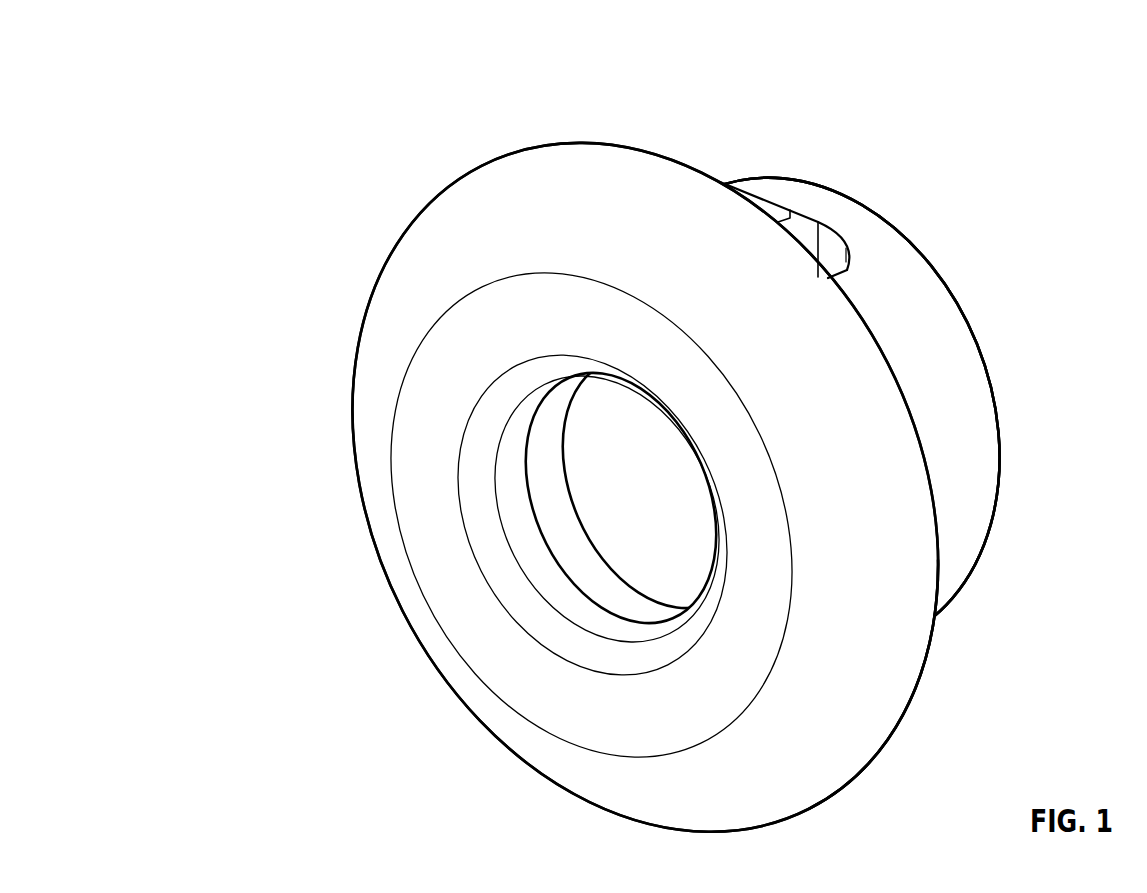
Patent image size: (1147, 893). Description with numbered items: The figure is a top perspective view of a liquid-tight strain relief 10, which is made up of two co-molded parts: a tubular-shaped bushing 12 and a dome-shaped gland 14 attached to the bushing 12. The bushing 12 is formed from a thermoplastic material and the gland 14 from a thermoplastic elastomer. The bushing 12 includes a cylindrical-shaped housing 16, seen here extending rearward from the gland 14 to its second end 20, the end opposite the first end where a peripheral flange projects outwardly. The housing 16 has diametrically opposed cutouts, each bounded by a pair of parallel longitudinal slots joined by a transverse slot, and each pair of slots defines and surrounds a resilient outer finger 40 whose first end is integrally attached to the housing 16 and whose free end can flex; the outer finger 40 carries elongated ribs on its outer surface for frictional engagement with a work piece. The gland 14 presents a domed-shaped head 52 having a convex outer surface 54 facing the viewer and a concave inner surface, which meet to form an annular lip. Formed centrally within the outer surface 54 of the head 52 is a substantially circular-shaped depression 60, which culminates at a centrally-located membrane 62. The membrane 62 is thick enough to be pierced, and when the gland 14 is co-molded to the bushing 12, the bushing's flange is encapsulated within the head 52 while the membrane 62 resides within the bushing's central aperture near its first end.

The liquid-tight strain relief 10 is at (271, 97).
The bushing 12 is at (983, 427).
The gland 14 is at (907, 665).
The housing 16 is at (905, 330).
The second end 20 is at (987, 370).
The outer finger 40 is at (803, 232).
The head 52 is at (425, 293).
The outer surface 54 is at (378, 429).
The depression 60 is at (546, 582).
The membrane 62 is at (607, 473).